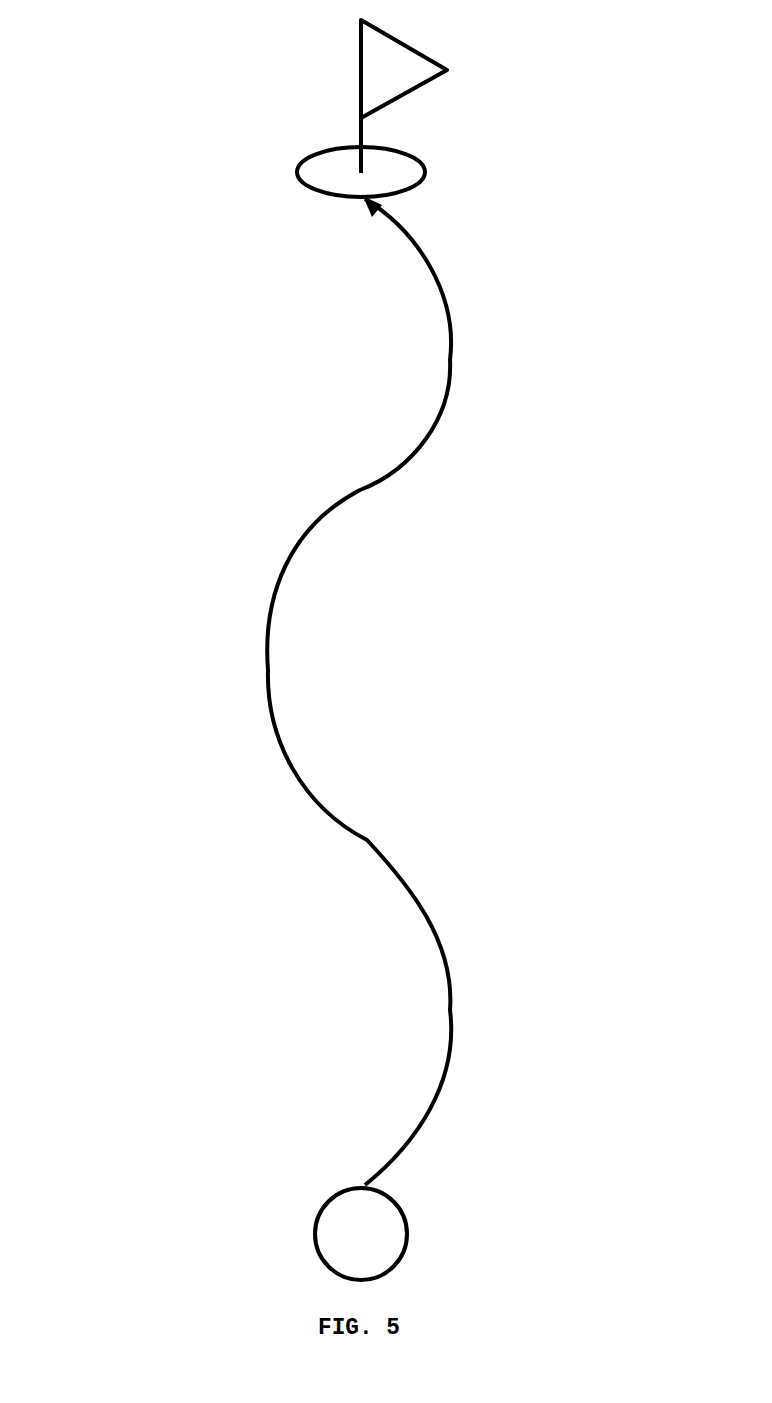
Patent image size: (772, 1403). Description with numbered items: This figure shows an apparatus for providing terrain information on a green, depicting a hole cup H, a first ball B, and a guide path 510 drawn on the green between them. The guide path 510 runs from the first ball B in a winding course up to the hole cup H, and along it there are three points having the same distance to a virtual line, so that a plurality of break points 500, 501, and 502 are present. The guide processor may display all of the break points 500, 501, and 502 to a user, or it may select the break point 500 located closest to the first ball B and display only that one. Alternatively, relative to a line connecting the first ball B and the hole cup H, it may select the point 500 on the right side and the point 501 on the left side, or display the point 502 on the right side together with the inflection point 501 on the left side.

The hole cup H is at (304, 196).
The first ball B is at (306, 1237).
The break point 500 is at (460, 1022).
The break point 501 is at (258, 673).
The break point 502 is at (460, 357).
The guide path 510 is at (398, 1123).